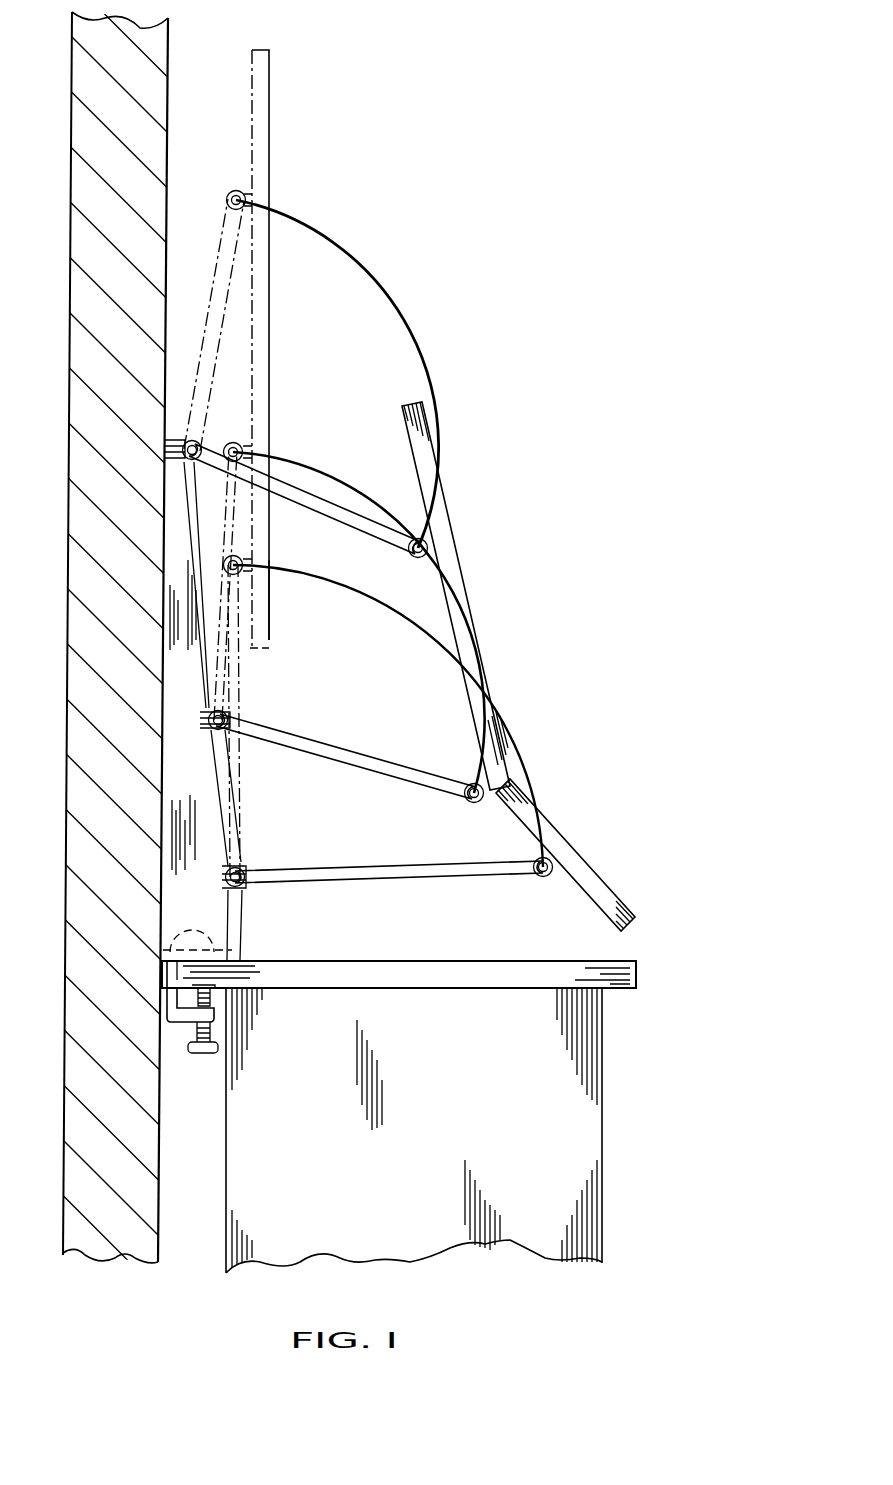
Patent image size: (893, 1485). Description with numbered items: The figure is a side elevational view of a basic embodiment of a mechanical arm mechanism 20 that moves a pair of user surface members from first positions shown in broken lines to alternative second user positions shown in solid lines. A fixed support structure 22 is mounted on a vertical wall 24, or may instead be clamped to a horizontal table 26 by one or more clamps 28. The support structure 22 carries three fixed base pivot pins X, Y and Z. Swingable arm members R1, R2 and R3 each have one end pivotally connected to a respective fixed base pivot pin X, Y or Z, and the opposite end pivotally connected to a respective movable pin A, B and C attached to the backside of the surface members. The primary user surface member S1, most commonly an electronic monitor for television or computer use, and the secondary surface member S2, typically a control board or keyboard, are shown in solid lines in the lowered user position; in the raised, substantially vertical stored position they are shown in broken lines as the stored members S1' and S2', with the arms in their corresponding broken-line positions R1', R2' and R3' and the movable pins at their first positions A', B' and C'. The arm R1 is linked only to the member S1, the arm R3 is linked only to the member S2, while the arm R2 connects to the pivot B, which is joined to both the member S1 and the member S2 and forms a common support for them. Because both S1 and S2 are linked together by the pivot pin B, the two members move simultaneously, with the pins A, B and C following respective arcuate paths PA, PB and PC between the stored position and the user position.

The mechanical arm mechanism 20 is at (512, 627).
The fixed support structure 22 is at (185, 765).
The vertical wall 24 is at (168, 118).
The horizontal table 26 is at (607, 962).
The clamp 28 is at (216, 1055).
The fixed base pivot pin X is at (183, 452).
The fixed base pivot pin Y is at (208, 720).
The fixed base pivot pin Z is at (222, 877).
The movable pin A is at (398, 558).
The movable pin B is at (452, 811).
The movable pin C is at (520, 888).
The movable pin in first position A' is at (219, 190).
The movable pin in first position B' is at (268, 436).
The movable pin in first position C' is at (264, 557).
The swingable arm member R1 is at (305, 499).
The swingable arm member R2 is at (346, 755).
The swingable arm member R3 is at (389, 857).
The swingable arm member in first position R1' is at (251, 325).
The swingable arm member in first position R2' is at (129, 586).
The swingable arm member in first position R3' is at (264, 721).
The primary user surface member S1 is at (463, 596).
The secondary surface member S2 is at (571, 855).
The primary user surface member in first position S1' is at (301, 349).
The secondary surface member in first position S2' is at (288, 615).
The arcuate path PA is at (418, 333).
The arcuate path PB is at (325, 470).
The arcuate path PC is at (524, 762).